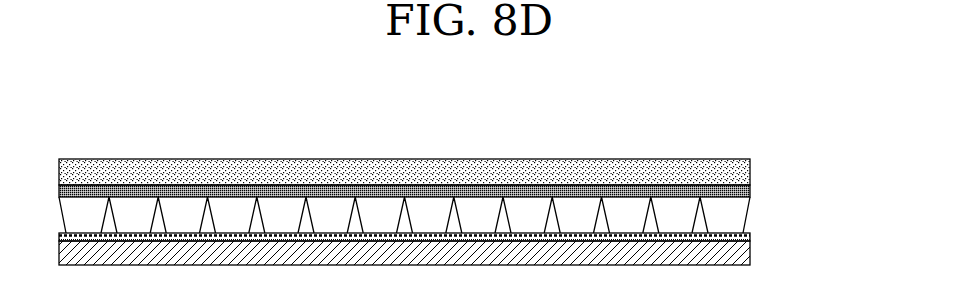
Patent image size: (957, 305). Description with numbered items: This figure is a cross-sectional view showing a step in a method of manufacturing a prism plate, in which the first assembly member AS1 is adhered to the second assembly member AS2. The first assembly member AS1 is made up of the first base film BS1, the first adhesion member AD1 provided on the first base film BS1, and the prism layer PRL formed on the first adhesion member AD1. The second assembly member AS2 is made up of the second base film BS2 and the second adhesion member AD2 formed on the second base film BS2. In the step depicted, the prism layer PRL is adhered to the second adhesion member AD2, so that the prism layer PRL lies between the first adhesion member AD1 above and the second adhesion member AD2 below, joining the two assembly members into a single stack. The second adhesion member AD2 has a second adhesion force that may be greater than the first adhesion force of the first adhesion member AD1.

The first base film BS1 is at (740, 170).
The first adhesion member AD1 is at (742, 190).
The prism layer PRL is at (735, 210).
The second adhesion member AD2 is at (740, 240).
The second base film BS2 is at (740, 260).
The first assembly member AS1 is at (467, 187).
The second assembly member AS2 is at (468, 247).